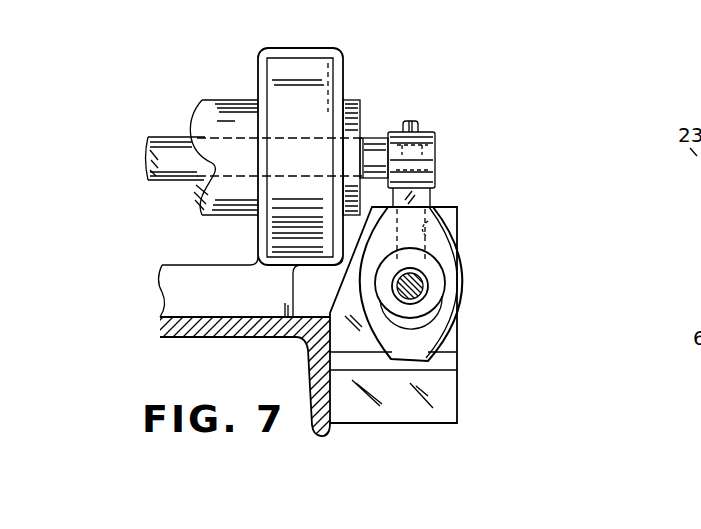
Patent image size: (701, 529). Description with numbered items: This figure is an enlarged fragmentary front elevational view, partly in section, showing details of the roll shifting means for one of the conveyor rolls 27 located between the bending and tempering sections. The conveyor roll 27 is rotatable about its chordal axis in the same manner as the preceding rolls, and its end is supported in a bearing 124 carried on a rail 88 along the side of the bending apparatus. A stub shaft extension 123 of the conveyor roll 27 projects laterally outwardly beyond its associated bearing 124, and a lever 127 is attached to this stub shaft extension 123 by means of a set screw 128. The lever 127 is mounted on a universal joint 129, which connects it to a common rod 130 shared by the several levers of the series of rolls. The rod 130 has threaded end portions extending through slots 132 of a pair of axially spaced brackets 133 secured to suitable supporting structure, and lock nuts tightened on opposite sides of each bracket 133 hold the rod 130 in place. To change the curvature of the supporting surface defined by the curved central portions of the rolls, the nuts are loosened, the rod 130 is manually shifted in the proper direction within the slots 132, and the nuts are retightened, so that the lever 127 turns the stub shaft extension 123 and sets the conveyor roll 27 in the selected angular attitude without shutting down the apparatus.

The conveyor roll 27 is at (213, 101).
The rail 88 is at (157, 316).
The stub shaft extension 123 is at (428, 128).
The bearing 124 is at (328, 57).
The lever 127 is at (430, 197).
The set screw 128 is at (400, 122).
The universal joint 129 is at (433, 265).
The rod 130 is at (428, 288).
The slot 132 is at (440, 226).
The bracket 133 is at (450, 343).